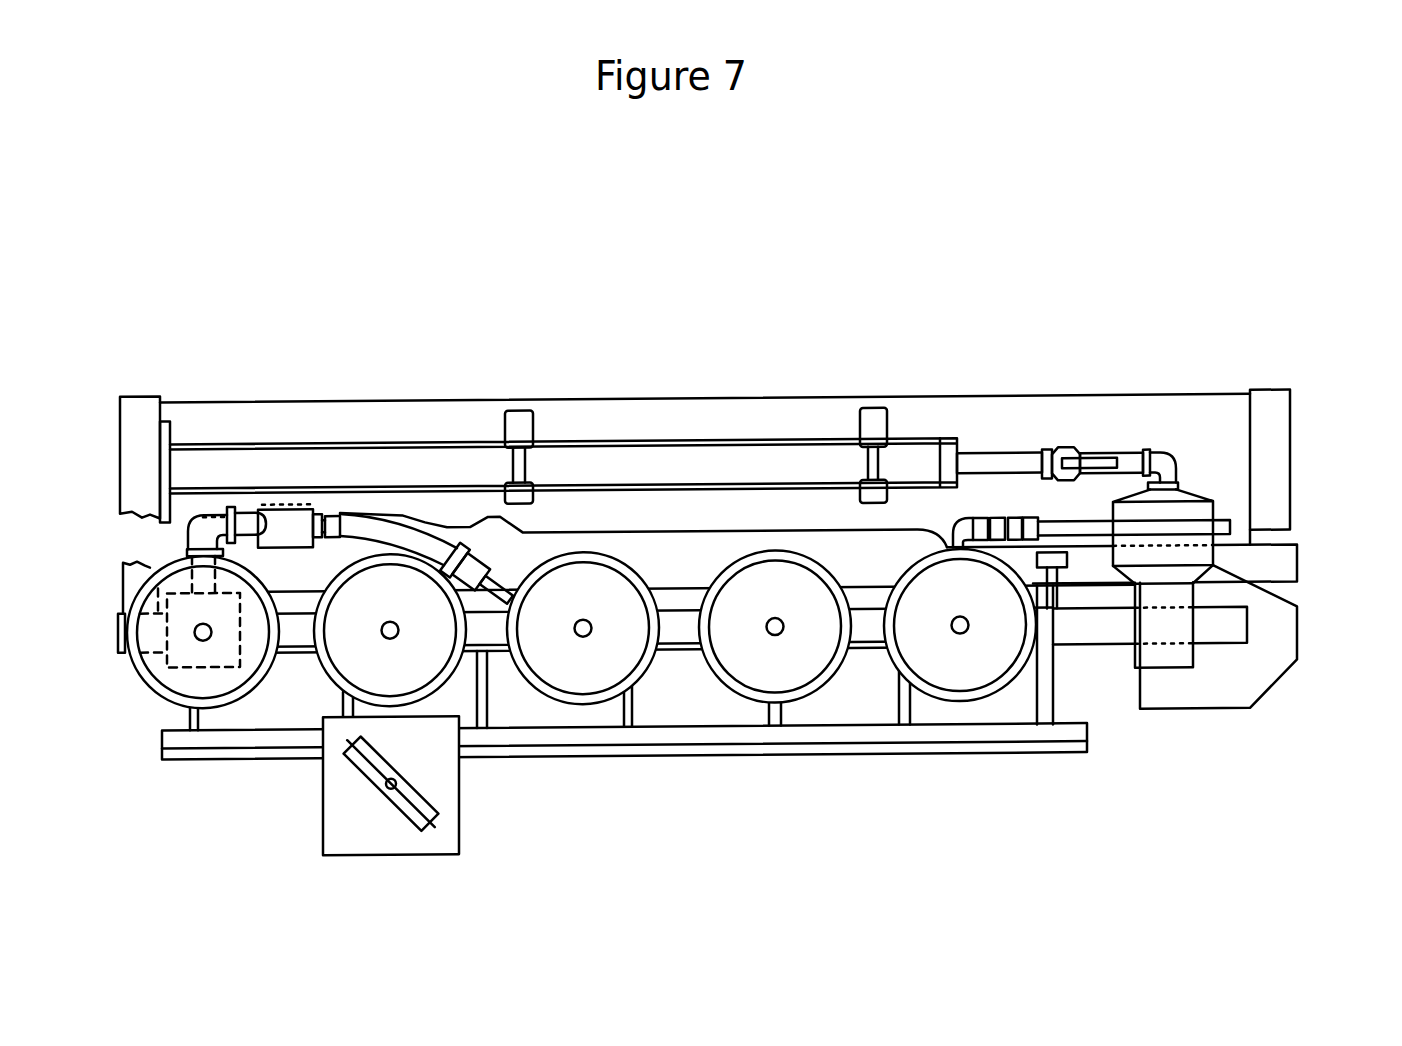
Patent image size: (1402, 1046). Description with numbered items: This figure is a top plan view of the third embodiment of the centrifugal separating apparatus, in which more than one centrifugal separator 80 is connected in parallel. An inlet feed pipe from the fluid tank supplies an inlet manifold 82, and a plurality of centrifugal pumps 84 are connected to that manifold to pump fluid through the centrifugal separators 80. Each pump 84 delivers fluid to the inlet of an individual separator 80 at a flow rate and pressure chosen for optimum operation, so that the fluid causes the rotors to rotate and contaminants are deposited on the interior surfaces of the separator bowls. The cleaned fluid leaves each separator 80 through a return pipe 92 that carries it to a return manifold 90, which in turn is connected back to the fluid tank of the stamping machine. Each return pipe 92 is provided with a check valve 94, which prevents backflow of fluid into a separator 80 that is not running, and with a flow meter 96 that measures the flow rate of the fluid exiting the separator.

The centrifugal separator 80 is at (977, 653).
The inlet manifold 82 is at (840, 437).
The centrifugal pump 84 is at (1193, 520).
The return manifold 90 is at (657, 554).
The return pipe 92 is at (392, 525).
The check valve 94 is at (470, 554).
The flow meter 96 is at (287, 519).